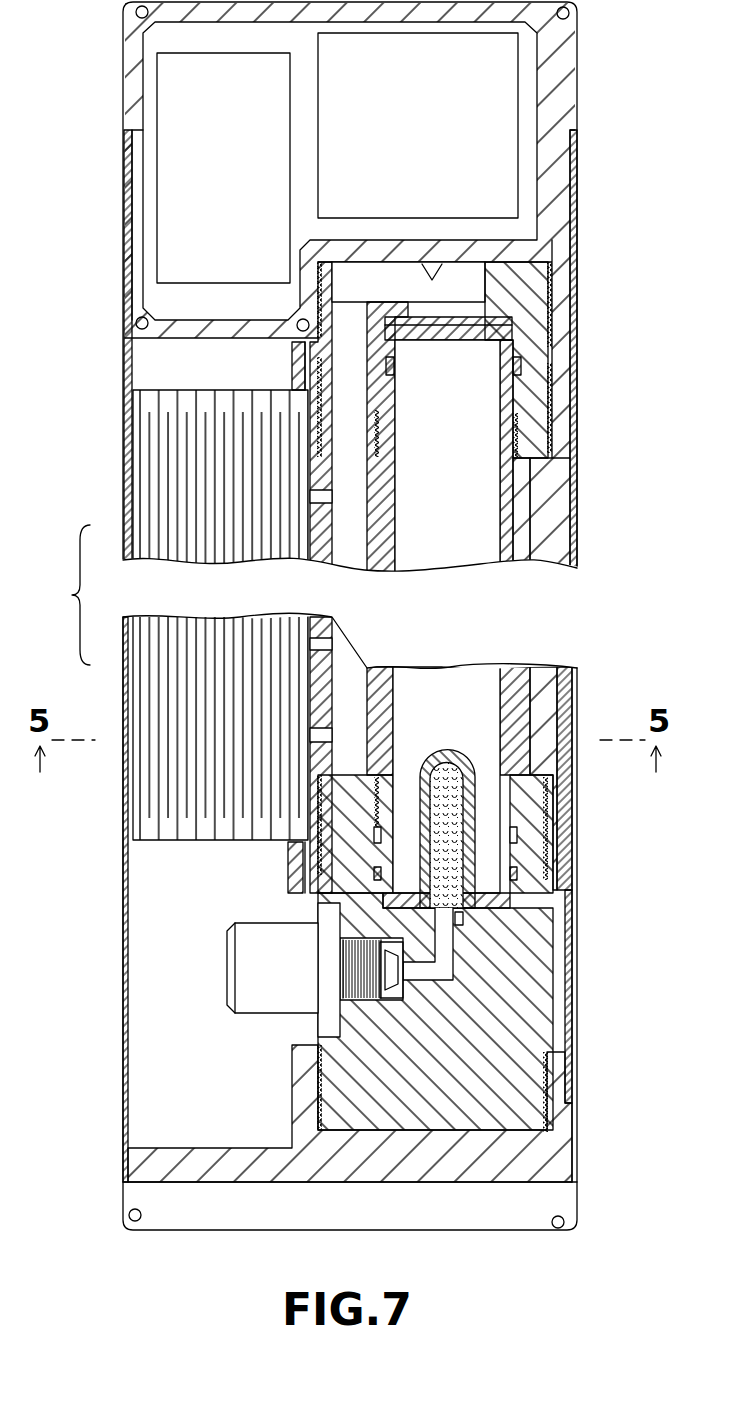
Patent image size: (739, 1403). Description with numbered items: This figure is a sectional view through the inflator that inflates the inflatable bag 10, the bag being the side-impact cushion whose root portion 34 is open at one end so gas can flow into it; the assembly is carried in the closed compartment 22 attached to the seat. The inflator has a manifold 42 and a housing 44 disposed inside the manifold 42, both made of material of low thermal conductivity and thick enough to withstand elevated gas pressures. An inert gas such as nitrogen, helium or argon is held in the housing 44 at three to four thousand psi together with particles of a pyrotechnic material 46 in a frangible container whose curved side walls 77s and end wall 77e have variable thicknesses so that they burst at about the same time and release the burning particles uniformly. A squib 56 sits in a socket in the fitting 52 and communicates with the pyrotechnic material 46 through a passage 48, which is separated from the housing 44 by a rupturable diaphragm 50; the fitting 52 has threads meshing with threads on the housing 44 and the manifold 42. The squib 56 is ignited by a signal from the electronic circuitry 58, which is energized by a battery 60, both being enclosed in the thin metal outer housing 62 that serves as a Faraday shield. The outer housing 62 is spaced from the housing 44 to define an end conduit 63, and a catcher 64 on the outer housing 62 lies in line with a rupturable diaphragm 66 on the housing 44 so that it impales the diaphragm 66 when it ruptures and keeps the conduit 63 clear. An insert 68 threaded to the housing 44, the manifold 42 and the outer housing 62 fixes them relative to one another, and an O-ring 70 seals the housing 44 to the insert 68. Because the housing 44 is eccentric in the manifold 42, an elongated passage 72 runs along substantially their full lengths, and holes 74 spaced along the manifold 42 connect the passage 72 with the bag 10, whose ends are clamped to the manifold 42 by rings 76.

The inflatable bag 10 is at (168, 459).
The compartment 22 is at (127, 876).
The root portion 34 is at (574, 677).
The manifold 42 is at (540, 525).
The housing 44 is at (520, 495).
The pyrotechnic material 46 is at (428, 760).
The passage 48 is at (452, 968).
The rupturable diaphragm 50 is at (462, 924).
The fitting 52 is at (548, 1027).
The squib 56 is at (352, 962).
The electronic circuitry 58 is at (401, 177).
The battery 60 is at (206, 200).
The outer housing 62 is at (133, 88).
The end conduit 63 is at (465, 290).
The catcher 64 is at (425, 272).
The rupturable diaphragm 66 is at (440, 330).
The insert 68 is at (525, 343).
The O-ring 70 is at (517, 374).
The elongated passage 72 is at (352, 508).
The holes 74 is at (334, 506).
The rings 76 is at (570, 357).
The end wall 77e is at (442, 760).
The curved side walls 77s is at (470, 808).